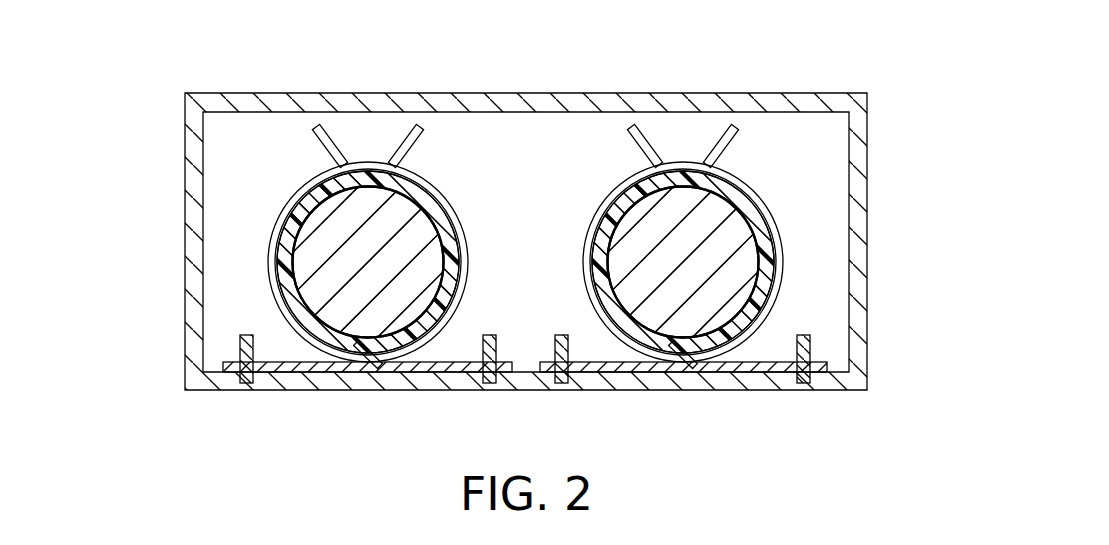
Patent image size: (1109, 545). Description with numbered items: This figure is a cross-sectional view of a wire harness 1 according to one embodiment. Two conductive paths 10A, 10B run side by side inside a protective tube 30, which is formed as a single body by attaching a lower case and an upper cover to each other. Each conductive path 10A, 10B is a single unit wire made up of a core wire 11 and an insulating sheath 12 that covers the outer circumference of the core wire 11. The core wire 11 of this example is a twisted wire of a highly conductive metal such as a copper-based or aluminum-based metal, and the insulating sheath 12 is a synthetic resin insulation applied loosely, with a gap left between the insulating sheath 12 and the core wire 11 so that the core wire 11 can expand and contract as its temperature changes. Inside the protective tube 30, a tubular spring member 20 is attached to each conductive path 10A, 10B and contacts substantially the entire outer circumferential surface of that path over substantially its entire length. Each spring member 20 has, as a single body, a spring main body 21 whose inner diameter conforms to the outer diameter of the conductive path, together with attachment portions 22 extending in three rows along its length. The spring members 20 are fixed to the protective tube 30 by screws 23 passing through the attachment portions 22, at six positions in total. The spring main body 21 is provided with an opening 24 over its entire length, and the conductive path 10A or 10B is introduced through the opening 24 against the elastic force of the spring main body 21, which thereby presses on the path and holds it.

The wire harness 1 is at (526, 224).
The conductive path 10A is at (132, 213).
The conductive path 10B is at (918, 282).
The core wire 11 is at (307, 260).
The insulating sheath 12 is at (290, 227).
The spring member 20 is at (522, 244).
The spring main body 21 is at (447, 182).
The attachment portion 22 is at (296, 368).
The screw 23 is at (242, 342).
The opening 24 is at (378, 166).
The protective tube 30 is at (503, 100).